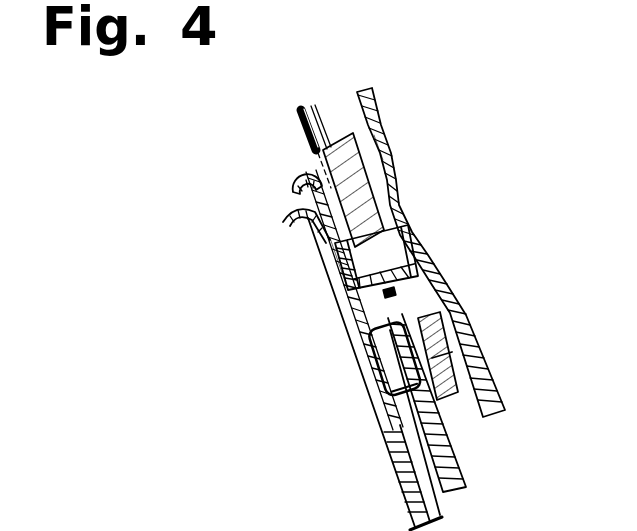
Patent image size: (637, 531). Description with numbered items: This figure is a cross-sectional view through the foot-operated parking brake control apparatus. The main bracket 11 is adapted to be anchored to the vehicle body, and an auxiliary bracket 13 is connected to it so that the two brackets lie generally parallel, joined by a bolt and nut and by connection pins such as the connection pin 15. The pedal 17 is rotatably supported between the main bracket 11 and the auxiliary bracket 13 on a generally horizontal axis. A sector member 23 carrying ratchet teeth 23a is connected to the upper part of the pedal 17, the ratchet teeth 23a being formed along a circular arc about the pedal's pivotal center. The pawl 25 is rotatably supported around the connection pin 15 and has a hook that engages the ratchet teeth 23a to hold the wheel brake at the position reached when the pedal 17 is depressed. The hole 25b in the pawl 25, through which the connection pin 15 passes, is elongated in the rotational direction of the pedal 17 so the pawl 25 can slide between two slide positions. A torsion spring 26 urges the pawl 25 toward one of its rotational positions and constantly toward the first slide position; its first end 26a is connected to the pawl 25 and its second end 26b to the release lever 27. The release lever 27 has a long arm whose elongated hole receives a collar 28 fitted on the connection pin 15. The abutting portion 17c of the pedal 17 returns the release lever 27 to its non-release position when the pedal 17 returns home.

The main bracket 11 is at (378, 100).
The first end of torsion spring 26a is at (342, 151).
The pawl 25 is at (370, 194).
The hole in pawl 25b is at (400, 246).
The ratchet teeth 23a is at (443, 309).
The sector member 23 is at (432, 348).
The pedal 17 is at (458, 458).
The abutting portion of pedal 17c is at (385, 357).
The auxiliary bracket 13 is at (393, 430).
The connection pin 15 is at (342, 298).
The collar 28 is at (352, 262).
The release lever 27 is at (303, 237).
The torsion spring 26 is at (296, 124).
The second end of torsion spring 26b is at (290, 190).